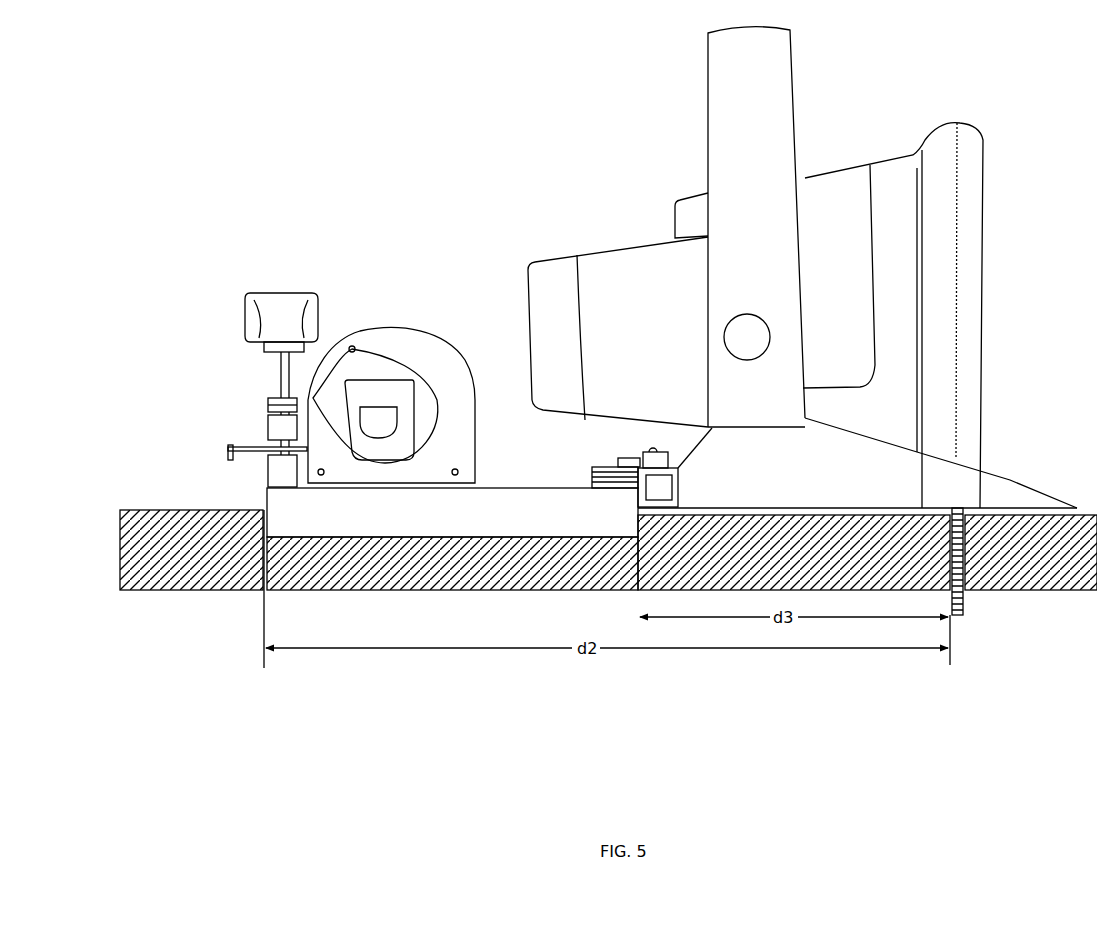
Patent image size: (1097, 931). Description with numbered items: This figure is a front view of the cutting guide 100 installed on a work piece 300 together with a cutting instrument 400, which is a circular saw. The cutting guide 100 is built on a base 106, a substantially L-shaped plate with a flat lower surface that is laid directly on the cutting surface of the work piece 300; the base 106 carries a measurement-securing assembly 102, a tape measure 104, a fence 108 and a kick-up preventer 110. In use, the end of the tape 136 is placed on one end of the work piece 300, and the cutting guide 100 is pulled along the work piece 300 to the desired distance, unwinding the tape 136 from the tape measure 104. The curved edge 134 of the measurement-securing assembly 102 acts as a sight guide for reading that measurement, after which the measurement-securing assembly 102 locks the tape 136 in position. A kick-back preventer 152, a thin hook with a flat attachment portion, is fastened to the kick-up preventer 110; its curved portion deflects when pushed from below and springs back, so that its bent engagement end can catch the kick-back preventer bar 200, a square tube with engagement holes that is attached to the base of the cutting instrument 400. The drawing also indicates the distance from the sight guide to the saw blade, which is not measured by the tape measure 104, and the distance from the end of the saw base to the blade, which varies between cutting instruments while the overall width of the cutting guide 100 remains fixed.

The cutting guide 100 is at (409, 201).
The measurement-securing assembly 102 is at (276, 287).
The tape measure 104 is at (397, 316).
The base 106 is at (491, 479).
The fence 108 is at (590, 479).
The kick-up preventer 110 is at (613, 461).
The curved edge (sight guide) 134 is at (268, 438).
The tape 136 is at (228, 447).
The kick-back preventer 152 is at (652, 447).
The kick-back preventer bar 200 is at (682, 487).
The work piece 300 is at (210, 590).
The cutting instrument 400 is at (626, 153).